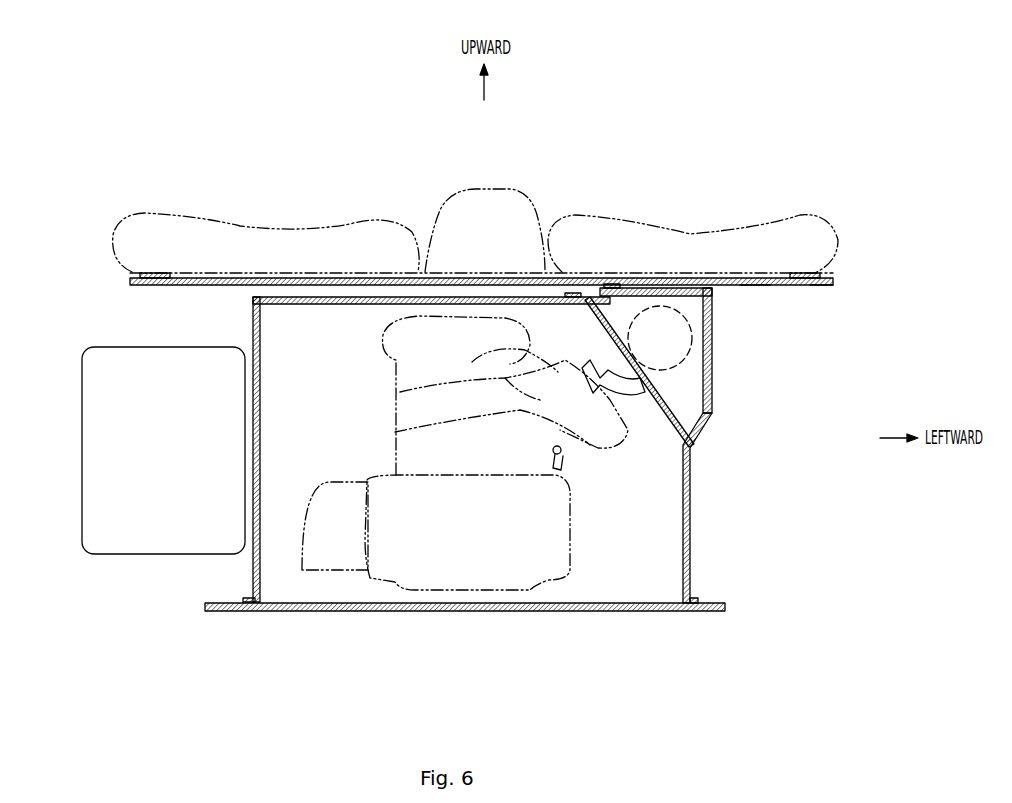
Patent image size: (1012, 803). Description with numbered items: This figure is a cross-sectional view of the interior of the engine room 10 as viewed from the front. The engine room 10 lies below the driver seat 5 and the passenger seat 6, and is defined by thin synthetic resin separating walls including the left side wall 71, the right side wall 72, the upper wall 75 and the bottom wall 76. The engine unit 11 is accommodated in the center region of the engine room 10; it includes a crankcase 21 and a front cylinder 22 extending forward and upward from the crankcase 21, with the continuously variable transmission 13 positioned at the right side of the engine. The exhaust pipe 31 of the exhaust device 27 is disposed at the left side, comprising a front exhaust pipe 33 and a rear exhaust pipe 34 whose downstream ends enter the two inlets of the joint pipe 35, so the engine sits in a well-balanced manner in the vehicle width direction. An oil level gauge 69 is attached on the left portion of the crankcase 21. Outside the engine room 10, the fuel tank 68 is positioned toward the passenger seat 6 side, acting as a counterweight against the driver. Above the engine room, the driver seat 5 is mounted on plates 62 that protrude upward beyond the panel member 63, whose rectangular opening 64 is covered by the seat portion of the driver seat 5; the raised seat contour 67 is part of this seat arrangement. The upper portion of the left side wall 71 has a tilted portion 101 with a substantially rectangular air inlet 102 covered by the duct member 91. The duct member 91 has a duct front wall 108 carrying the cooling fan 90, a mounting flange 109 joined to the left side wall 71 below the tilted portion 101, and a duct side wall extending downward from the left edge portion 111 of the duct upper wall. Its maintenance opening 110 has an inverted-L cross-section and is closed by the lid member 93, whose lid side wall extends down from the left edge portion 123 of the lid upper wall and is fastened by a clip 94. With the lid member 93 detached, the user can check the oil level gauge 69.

The driver seat 5 is at (847, 220).
The passenger seat 6 is at (116, 228).
The engine room 10 is at (286, 567).
The engine unit 11 is at (545, 592).
The transmission 13 is at (330, 575).
The crankcase 21 is at (463, 612).
The front cylinder 22 is at (395, 360).
The exhaust device 27 is at (496, 405).
The exhaust pipe 31 is at (525, 415).
The front exhaust pipe 33 is at (395, 423).
The rear exhaust pipe 34 is at (398, 393).
The joint pipe 35 is at (598, 452).
The plate 62 is at (592, 275).
The panel member 63 is at (828, 287).
The opening 64 is at (758, 287).
The center seat hump 67 is at (458, 190).
The fuel tank 68 is at (92, 418).
The oil level gauge 69 is at (560, 465).
The left side wall 71 is at (690, 556).
The right side wall 72 is at (260, 573).
The upper wall 75 is at (305, 300).
The bottom wall 76 is at (648, 612).
The cooling fan 90 is at (692, 360).
The duct member 91 is at (567, 280).
The lid member 93 is at (712, 405).
The clip 94 is at (600, 280).
The tilted portion 101 is at (592, 310).
The air inlet 102 is at (655, 448).
The duct front wall 108 is at (695, 440).
The mounting flange 109 is at (705, 455).
The maintenance opening 110 is at (686, 408).
The left edge portion 111 is at (705, 290).
The left edge portion 123 is at (712, 295).